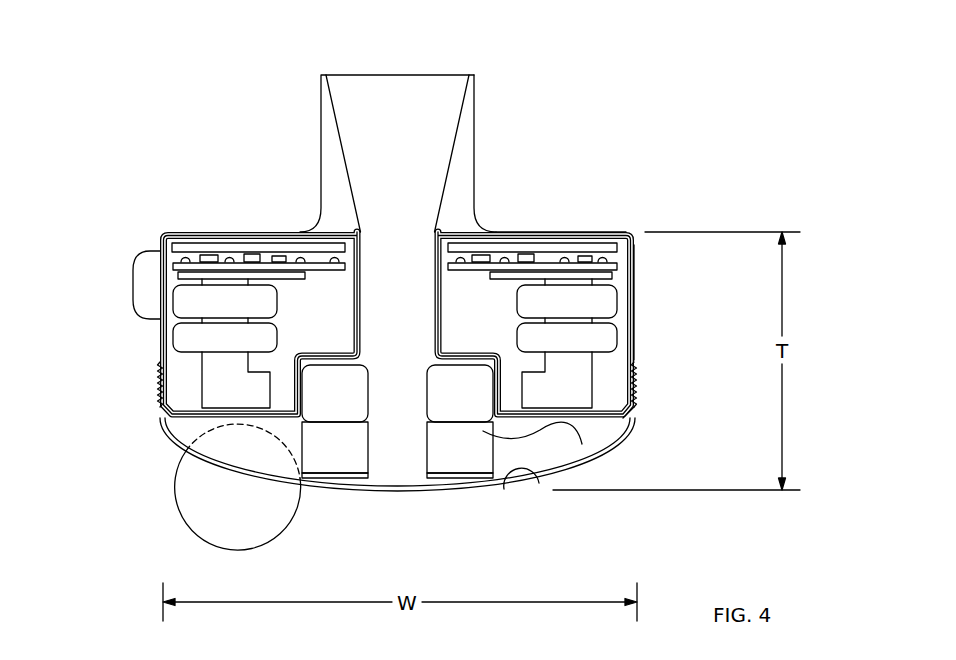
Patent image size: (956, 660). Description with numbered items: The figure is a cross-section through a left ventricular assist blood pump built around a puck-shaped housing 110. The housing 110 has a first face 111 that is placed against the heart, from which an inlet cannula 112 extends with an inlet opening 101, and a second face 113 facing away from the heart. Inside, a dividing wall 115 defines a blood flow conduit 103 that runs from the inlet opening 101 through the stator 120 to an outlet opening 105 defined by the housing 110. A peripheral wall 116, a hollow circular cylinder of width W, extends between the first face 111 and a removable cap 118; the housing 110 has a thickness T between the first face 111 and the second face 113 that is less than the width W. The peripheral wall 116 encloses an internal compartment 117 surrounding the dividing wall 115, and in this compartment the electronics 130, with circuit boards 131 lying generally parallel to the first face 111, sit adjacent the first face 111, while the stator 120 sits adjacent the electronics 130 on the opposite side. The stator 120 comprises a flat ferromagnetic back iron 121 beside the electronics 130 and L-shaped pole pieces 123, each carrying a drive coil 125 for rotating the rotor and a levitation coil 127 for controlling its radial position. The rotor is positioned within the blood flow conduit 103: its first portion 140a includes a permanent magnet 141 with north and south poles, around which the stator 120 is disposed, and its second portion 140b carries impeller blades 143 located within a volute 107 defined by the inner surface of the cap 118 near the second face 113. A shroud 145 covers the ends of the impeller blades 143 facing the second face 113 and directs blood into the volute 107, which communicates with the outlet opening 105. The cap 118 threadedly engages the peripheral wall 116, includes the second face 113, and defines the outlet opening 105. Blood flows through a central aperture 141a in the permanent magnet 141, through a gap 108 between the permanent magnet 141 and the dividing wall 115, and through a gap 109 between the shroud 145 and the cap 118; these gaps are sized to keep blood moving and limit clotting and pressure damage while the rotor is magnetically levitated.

The inlet opening 101 is at (443, 73).
The blood flow conduit 103 is at (423, 226).
The outlet opening 105 is at (245, 453).
The volute 107 is at (582, 444).
The gap 108 is at (352, 362).
The gap 109 is at (323, 480).
The housing 110 is at (162, 337).
The first face 111 is at (525, 233).
The inlet cannula 112 is at (476, 152).
The second face 113 is at (522, 488).
The dividing wall 115 is at (438, 337).
The peripheral wall 116 is at (637, 268).
The internal compartment 117 is at (338, 305).
The removable cap 118 is at (178, 432).
The stator 120 is at (614, 371).
The back iron 121 is at (180, 278).
The pole piece 123 is at (212, 380).
The drive coil 125 is at (618, 303).
The levitation coil 127 is at (618, 342).
The electronics 130 is at (330, 232).
The circuit boards 131 is at (462, 250).
The first portion of the rotor 140a is at (490, 390).
The second portion of the rotor 140b is at (628, 419).
The permanent magnet 141 is at (310, 398).
The central aperture 141a is at (420, 408).
The impeller blades 143 is at (458, 458).
The shroud 145 is at (342, 475).